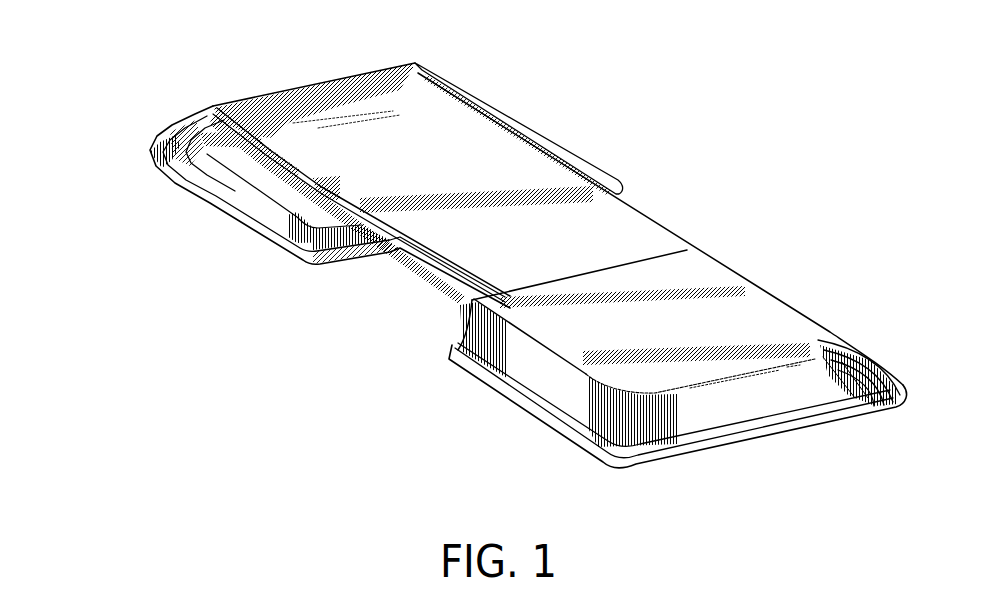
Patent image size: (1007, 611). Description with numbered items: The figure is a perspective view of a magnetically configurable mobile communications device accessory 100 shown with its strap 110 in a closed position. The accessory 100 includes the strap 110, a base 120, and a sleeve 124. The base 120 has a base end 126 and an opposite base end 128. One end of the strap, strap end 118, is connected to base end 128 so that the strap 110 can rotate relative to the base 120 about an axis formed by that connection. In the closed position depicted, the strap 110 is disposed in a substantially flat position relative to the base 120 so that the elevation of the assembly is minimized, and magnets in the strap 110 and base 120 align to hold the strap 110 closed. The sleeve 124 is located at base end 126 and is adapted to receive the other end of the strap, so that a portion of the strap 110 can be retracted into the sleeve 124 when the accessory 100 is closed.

The magnetically configurable mobile communications device accessory 100 is at (502, 396).
The strap 110 is at (500, 157).
The strap end 118 is at (320, 83).
The base 120 is at (247, 223).
The sleeve 124 is at (697, 282).
The base end 126 is at (800, 437).
The base end 128 is at (198, 115).